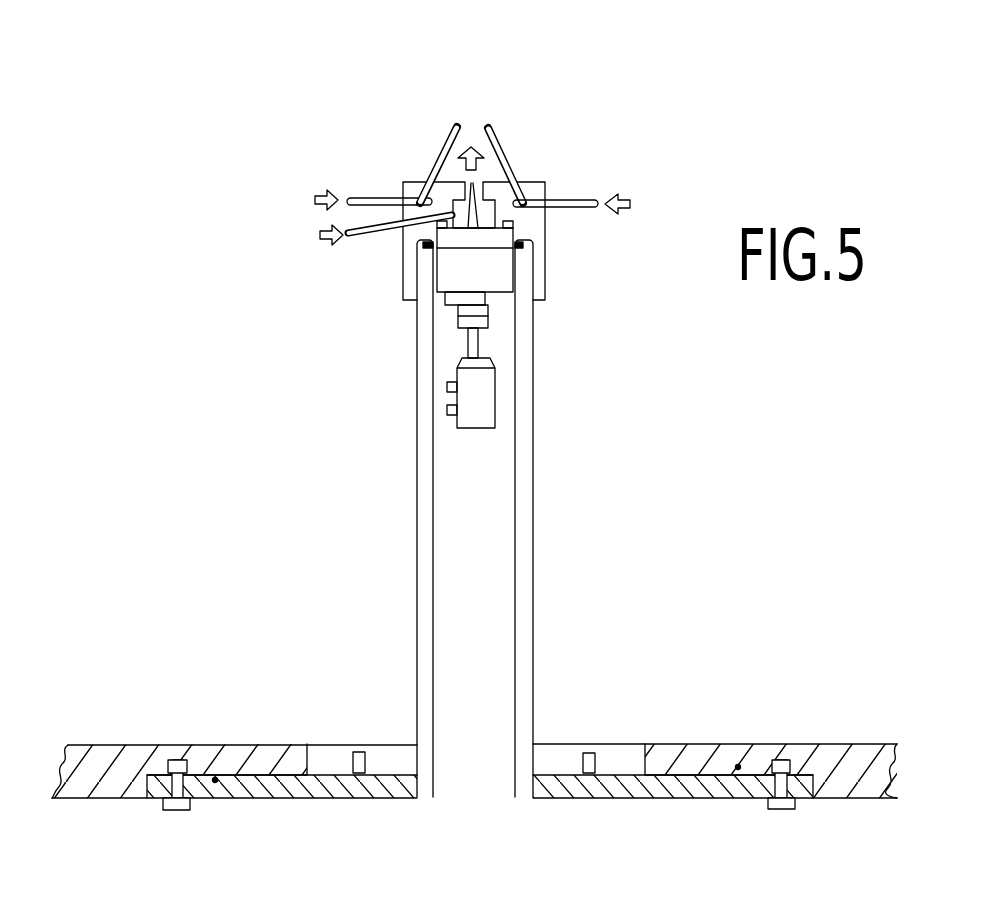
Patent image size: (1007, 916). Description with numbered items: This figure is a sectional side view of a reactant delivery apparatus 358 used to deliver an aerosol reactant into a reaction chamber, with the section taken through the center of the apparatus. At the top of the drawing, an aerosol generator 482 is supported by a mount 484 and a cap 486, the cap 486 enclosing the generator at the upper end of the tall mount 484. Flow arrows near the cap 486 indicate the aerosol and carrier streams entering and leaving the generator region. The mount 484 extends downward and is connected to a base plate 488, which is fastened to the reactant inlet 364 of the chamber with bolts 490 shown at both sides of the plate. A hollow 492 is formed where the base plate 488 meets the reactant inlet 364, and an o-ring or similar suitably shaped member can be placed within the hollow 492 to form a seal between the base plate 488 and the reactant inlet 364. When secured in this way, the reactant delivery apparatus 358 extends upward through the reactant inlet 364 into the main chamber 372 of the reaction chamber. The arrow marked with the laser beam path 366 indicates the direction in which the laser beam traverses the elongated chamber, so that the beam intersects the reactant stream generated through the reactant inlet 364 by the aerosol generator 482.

The reactant delivery apparatus 358 is at (408, 319).
The reactant inlet 364 is at (678, 743).
The laser beam path 366 is at (580, 88).
The main chamber 372 is at (727, 495).
The aerosol generator 482 is at (500, 265).
The mount 484 is at (415, 625).
The cap 486 is at (536, 227).
The base plate 488 is at (317, 798).
The bolts 490 is at (177, 812).
The hollow 492 is at (215, 780).